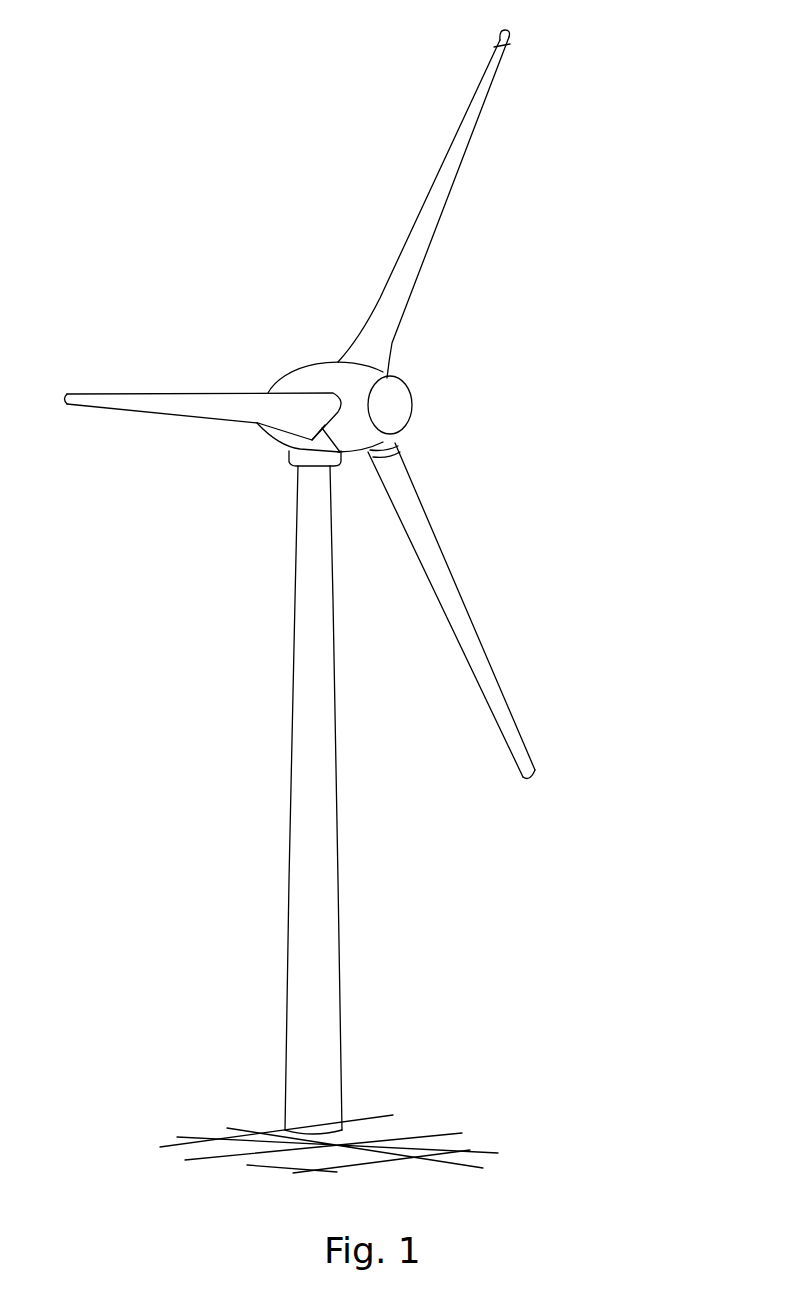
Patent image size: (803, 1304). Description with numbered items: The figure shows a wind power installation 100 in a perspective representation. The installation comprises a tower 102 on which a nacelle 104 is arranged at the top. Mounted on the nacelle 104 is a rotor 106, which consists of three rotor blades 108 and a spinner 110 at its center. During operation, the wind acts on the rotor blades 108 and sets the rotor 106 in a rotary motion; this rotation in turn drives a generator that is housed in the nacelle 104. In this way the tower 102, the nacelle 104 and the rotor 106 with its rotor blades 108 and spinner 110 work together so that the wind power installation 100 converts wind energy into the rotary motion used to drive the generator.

The wind power installation 100 is at (252, 530).
The tower 102 is at (320, 902).
The nacelle 104 is at (307, 378).
The rotor 106 is at (478, 324).
The rotor blades 108 is at (455, 160).
The spinner 110 is at (395, 405).